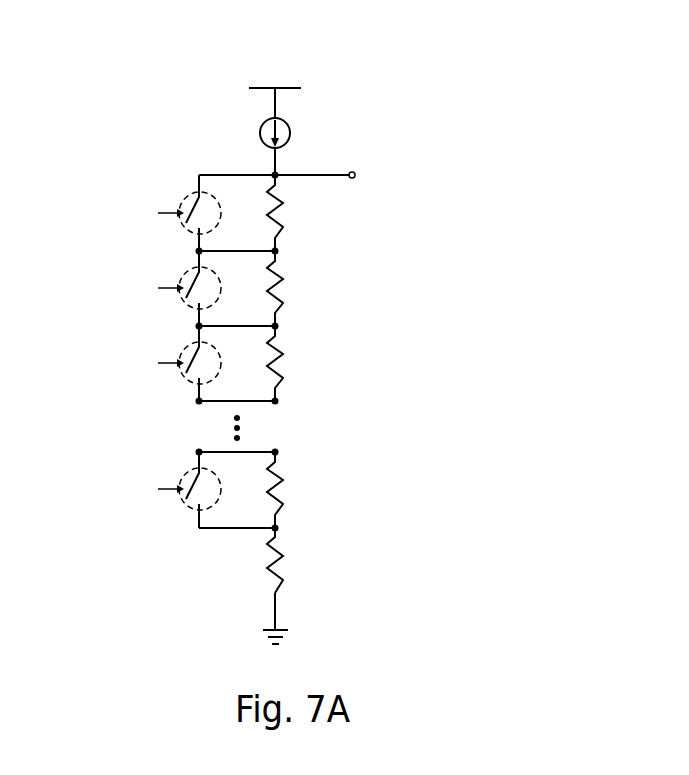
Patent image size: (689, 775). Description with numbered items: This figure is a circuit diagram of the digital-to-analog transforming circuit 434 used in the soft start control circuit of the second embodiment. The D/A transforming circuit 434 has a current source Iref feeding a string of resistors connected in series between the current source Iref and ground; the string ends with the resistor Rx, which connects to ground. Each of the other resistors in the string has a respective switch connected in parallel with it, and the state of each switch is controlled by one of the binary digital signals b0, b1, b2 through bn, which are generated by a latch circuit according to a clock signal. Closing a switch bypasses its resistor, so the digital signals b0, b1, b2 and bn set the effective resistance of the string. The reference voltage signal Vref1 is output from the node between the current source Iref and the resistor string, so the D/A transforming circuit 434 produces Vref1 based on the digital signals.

The digital-to-analog transforming circuit 434 is at (388, 60).
The current source Iref is at (295, 133).
The reference voltage signal Vref1 is at (380, 177).
The resistor Rx is at (291, 560).
The binary digital signal b0 is at (157, 212).
The binary digital signal b1 is at (157, 287).
The binary digital signal b2 is at (157, 362).
The binary digital signal bn is at (158, 489).